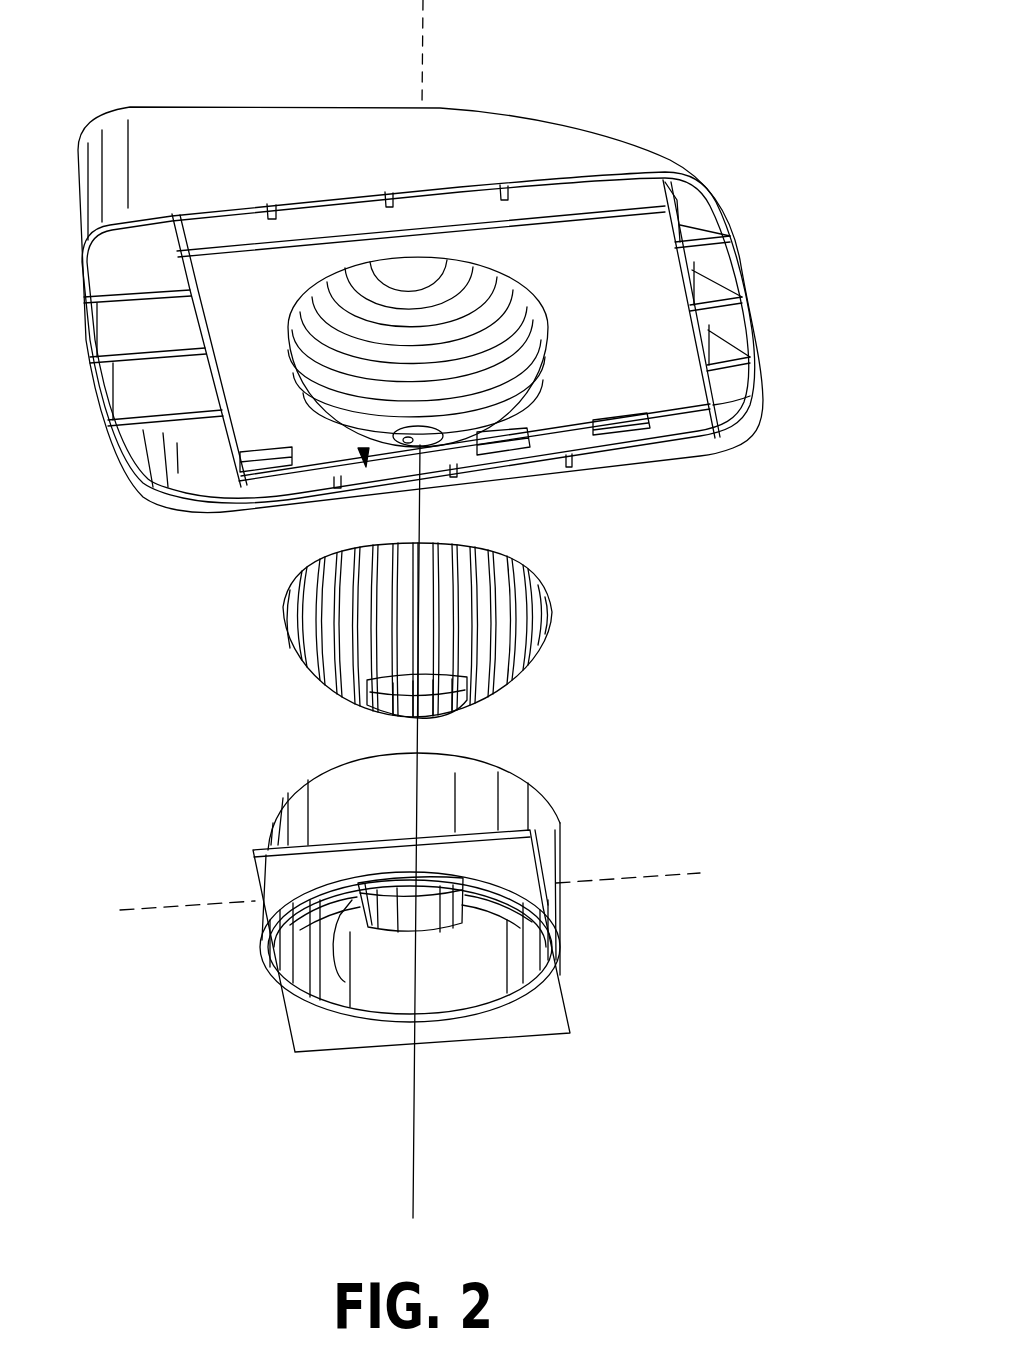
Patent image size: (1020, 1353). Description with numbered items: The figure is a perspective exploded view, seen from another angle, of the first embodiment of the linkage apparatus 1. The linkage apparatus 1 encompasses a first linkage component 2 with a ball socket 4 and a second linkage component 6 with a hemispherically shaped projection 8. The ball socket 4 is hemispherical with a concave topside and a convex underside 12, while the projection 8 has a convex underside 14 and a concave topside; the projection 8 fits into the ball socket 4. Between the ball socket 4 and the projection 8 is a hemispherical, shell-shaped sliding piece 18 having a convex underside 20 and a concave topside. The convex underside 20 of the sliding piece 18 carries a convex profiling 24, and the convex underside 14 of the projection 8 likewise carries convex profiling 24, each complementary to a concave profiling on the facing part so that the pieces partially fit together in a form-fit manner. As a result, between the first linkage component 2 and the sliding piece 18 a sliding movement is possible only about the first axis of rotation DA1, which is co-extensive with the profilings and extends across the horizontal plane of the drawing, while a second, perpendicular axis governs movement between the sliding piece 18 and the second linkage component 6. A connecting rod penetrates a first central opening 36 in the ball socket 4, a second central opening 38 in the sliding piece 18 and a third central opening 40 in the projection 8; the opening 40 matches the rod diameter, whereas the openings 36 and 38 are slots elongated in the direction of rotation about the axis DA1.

The linkage apparatus 1 is at (455, 609).
The first linkage component 2 is at (474, 902).
The ball socket 4 is at (552, 805).
The second linkage component 6 is at (760, 298).
The hemispherically shaped projection 8 is at (444, 397).
The convex underside 12 is at (345, 982).
The convex underside 14 is at (542, 303).
The sliding piece 18 is at (455, 645).
The convex underside 20 is at (528, 643).
The convex profiling 24 is at (503, 904).
The first central opening 36 is at (425, 926).
The second central opening 38 is at (365, 703).
The third central opening 40 is at (404, 445).
The first axis of rotation DA1 is at (222, 900).